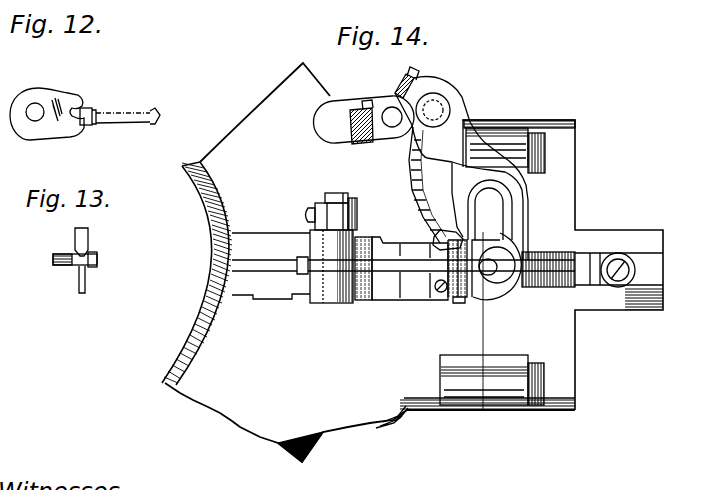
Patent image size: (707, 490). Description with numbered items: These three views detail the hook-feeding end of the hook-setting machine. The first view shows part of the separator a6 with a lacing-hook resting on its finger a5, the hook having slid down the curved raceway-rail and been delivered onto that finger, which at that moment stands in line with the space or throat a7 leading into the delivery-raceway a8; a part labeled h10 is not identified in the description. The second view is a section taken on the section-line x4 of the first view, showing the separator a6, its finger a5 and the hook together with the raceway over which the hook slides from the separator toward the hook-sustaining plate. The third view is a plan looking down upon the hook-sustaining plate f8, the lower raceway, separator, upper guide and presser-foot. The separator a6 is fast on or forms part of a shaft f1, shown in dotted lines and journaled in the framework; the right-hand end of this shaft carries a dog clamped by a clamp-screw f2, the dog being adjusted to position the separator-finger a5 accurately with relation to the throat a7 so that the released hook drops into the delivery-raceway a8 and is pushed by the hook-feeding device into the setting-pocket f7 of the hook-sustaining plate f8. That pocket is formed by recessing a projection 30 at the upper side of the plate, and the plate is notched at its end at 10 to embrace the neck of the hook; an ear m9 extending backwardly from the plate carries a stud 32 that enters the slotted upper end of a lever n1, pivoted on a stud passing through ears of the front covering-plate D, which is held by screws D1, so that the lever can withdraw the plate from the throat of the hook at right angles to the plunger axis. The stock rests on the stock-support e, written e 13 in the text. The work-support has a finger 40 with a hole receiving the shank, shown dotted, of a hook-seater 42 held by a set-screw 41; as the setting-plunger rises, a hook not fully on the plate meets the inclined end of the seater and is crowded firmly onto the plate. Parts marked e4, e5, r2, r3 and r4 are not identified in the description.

In FIG. 12, the shaft f1 is at (34, 119).
In FIG. 14, the shaft f1 is at (323, 299).
In FIG. 14, the clamp-screw f2 is at (312, 211).
In FIG. 14, the setting-pocket f7 is at (488, 258).
In FIG. 14, the hook-sustaining plate f8 is at (528, 262).
In FIG. 12, the separator-finger a5 is at (86, 127).
In FIG. 13, the separator-finger a5 is at (76, 264).
In FIG. 12, the separator a6 is at (66, 137).
In FIG. 13, the separator a6 is at (53, 258).
In FIG. 14, the separator a6 is at (374, 298).
In FIG. 14, the throat a7 is at (435, 268).
In FIG. 13, the delivery-raceway a8 is at (86, 250).
In FIG. 14, the delivery-raceway a8 is at (397, 330).
In FIG. 12, the section-line x4 is at (108, 114).
In FIG. 12, the hook h10 is at (163, 113).
In FIG. 14, the stock-support e is at (529, 205).
In FIG. 14, the cylinder e4 is at (474, 176).
In FIG. 14, the cam e5 is at (388, 114).
In FIG. 14, the front covering-plate D is at (568, 362).
In FIG. 14, the screws D1 is at (545, 152).
In FIG. 14, the block r2 is at (590, 248).
In FIG. 14, the clamp r3 is at (360, 200).
In FIG. 14, the screw r4 is at (642, 248).
In FIG. 14, the ear m9 is at (565, 250).
In FIG. 14, the lever n1 is at (576, 245).
In FIG. 14, the stock-support 13 is at (575, 171).
In FIG. 14, the projection 30 is at (500, 268).
In FIG. 14, the stud 32 is at (559, 287).
In FIG. 14, the finger 40 is at (447, 296).
In FIG. 14, the set-screw 41 is at (462, 305).
In FIG. 14, the hook-seater 42 is at (484, 321).
In FIG. 14, the notch 10 is at (484, 292).